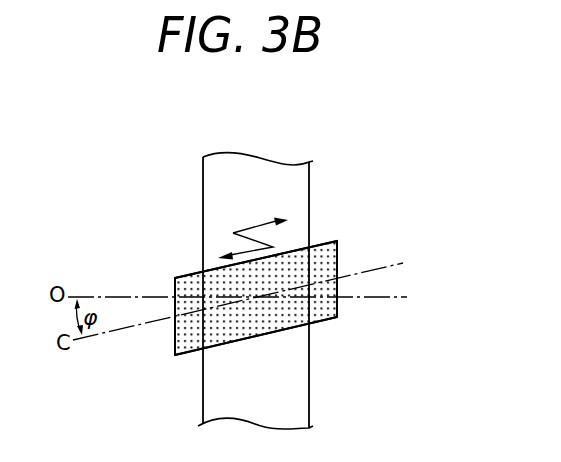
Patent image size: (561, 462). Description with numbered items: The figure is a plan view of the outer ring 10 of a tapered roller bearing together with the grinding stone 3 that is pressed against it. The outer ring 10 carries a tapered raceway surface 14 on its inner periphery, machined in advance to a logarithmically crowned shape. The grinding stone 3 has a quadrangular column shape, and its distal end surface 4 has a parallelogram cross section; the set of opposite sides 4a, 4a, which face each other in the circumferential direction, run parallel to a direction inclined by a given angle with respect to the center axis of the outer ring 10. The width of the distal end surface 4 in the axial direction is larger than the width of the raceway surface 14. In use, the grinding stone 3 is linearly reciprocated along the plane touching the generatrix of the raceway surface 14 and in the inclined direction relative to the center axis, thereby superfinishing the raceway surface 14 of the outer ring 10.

The grinding stone 3 is at (342, 248).
The distal end surface 4 is at (325, 308).
The opposite sides 4a is at (325, 240).
The outer ring 10 is at (263, 291).
The raceway surface 14 is at (235, 192).